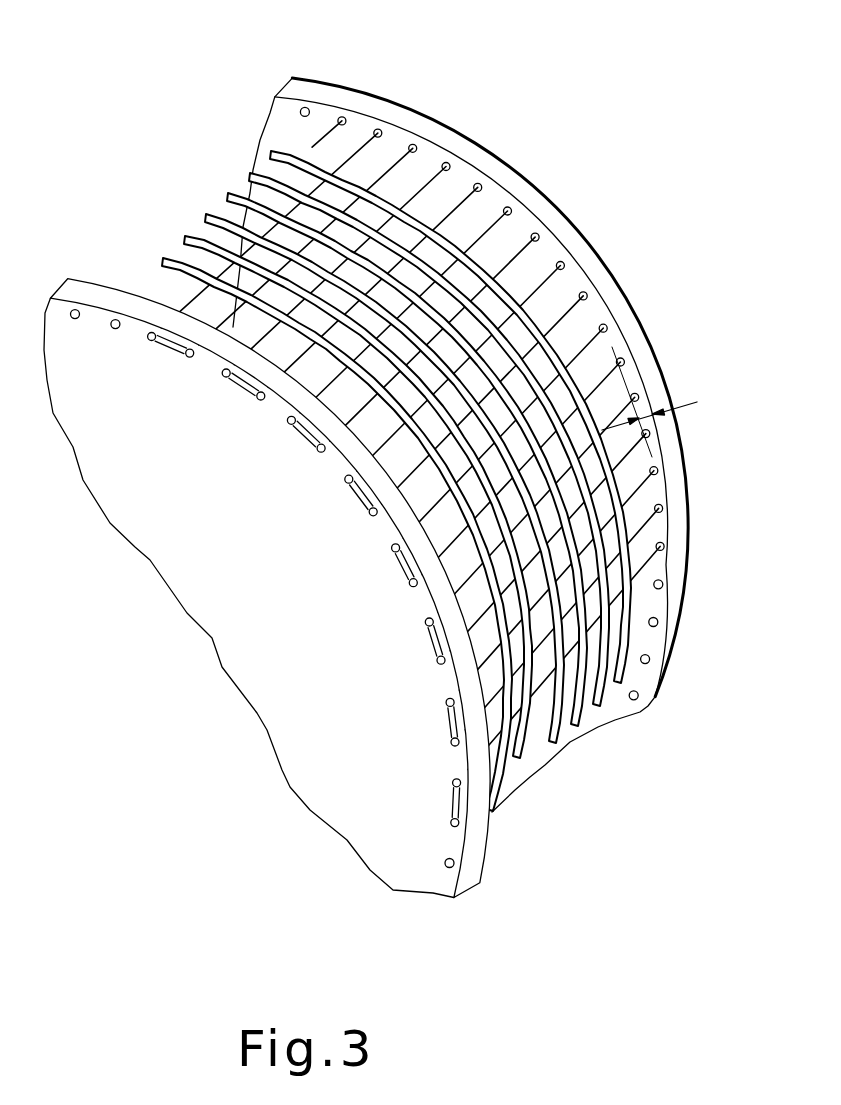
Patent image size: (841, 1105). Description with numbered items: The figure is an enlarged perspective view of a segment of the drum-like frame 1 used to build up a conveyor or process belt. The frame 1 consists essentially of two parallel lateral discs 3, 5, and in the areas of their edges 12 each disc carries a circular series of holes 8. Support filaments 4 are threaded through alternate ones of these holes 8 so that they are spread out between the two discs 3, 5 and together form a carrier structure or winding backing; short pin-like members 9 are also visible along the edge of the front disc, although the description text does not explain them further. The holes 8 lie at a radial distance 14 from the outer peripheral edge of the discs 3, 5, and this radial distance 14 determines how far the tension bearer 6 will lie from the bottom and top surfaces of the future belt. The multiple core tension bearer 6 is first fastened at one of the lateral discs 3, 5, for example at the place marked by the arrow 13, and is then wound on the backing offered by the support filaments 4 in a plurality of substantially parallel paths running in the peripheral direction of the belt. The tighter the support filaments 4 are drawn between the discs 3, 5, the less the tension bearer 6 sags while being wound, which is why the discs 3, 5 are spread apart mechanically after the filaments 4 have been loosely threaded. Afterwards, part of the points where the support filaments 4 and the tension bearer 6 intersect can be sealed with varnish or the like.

The drum-like frame 1 is at (503, 150).
The lateral disc 3 is at (568, 285).
The support filaments 4 is at (548, 280).
The lateral disc 5 is at (314, 675).
The tension bearer 6 is at (608, 715).
The holes 8 is at (645, 668).
The pins 9 is at (361, 491).
The edges 12 is at (668, 642).
The arrow 13 is at (152, 342).
The radial distance 14 is at (650, 403).